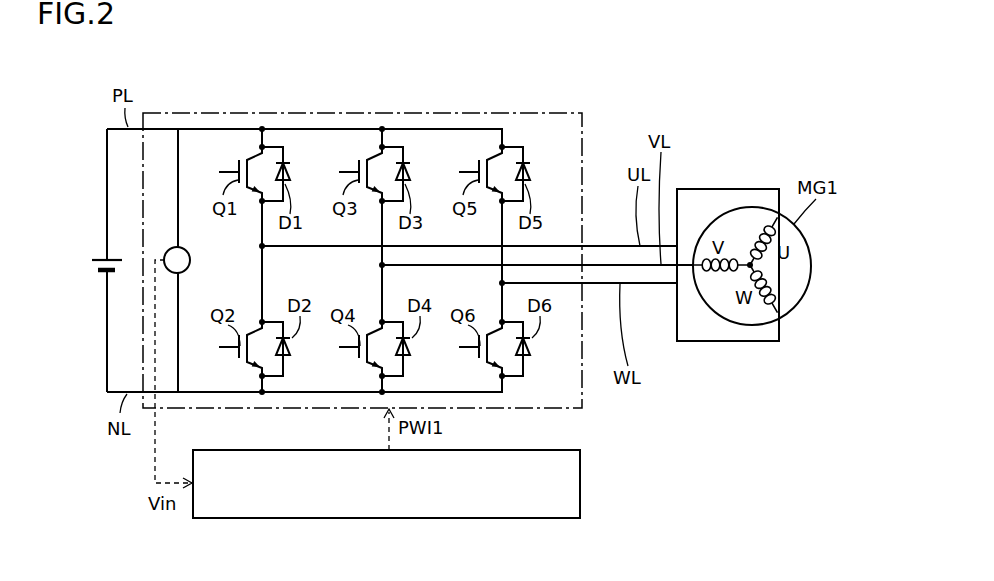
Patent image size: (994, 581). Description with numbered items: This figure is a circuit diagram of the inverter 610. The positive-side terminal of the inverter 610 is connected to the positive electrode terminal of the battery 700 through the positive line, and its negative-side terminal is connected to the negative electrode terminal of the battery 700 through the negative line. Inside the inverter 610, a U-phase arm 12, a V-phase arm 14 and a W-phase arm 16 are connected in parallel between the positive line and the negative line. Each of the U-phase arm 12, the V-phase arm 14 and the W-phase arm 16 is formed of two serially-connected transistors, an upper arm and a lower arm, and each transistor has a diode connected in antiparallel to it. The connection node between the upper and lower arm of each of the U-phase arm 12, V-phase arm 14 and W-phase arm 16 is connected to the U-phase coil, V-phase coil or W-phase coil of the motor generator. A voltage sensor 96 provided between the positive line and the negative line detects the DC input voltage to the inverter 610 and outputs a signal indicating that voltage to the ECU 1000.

The battery 700 is at (98, 258).
The voltage sensor 96 is at (189, 258).
The inverter 610 is at (540, 113).
The U-phase arm 12 is at (256, 258).
The V-phase arm 14 is at (376, 276).
The W-phase arm 16 is at (495, 296).
The ECU 1000 is at (388, 522).